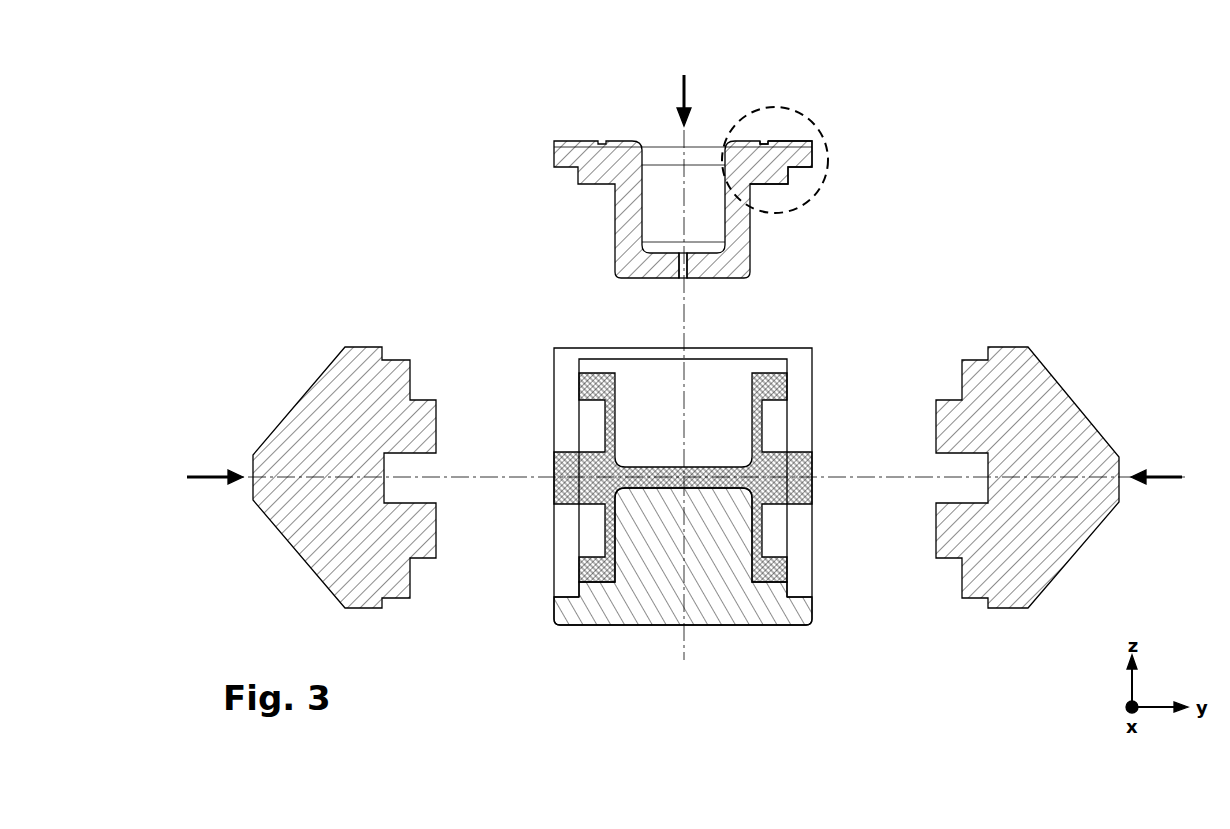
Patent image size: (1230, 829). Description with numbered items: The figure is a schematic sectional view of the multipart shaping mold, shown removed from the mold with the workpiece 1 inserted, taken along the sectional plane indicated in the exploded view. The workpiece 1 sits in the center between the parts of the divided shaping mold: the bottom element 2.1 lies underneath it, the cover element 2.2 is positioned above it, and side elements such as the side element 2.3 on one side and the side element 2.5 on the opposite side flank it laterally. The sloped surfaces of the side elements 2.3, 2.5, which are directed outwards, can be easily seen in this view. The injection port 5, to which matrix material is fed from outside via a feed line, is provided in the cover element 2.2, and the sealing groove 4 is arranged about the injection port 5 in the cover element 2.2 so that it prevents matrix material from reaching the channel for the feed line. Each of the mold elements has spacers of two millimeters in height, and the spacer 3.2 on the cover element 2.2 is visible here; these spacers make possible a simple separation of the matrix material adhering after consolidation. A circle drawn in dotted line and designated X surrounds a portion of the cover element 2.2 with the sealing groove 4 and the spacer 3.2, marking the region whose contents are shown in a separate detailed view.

The workpiece 1 is at (770, 565).
The bottom element 2.1 is at (650, 563).
The cover element 2.2 is at (573, 155).
The side element 2.3 is at (1037, 397).
The side element 2.5 is at (342, 414).
The spacer 3.2 is at (797, 141).
The sealing groove 4 is at (769, 140).
The injection port 5 is at (512, 223).
The circle X is at (825, 183).